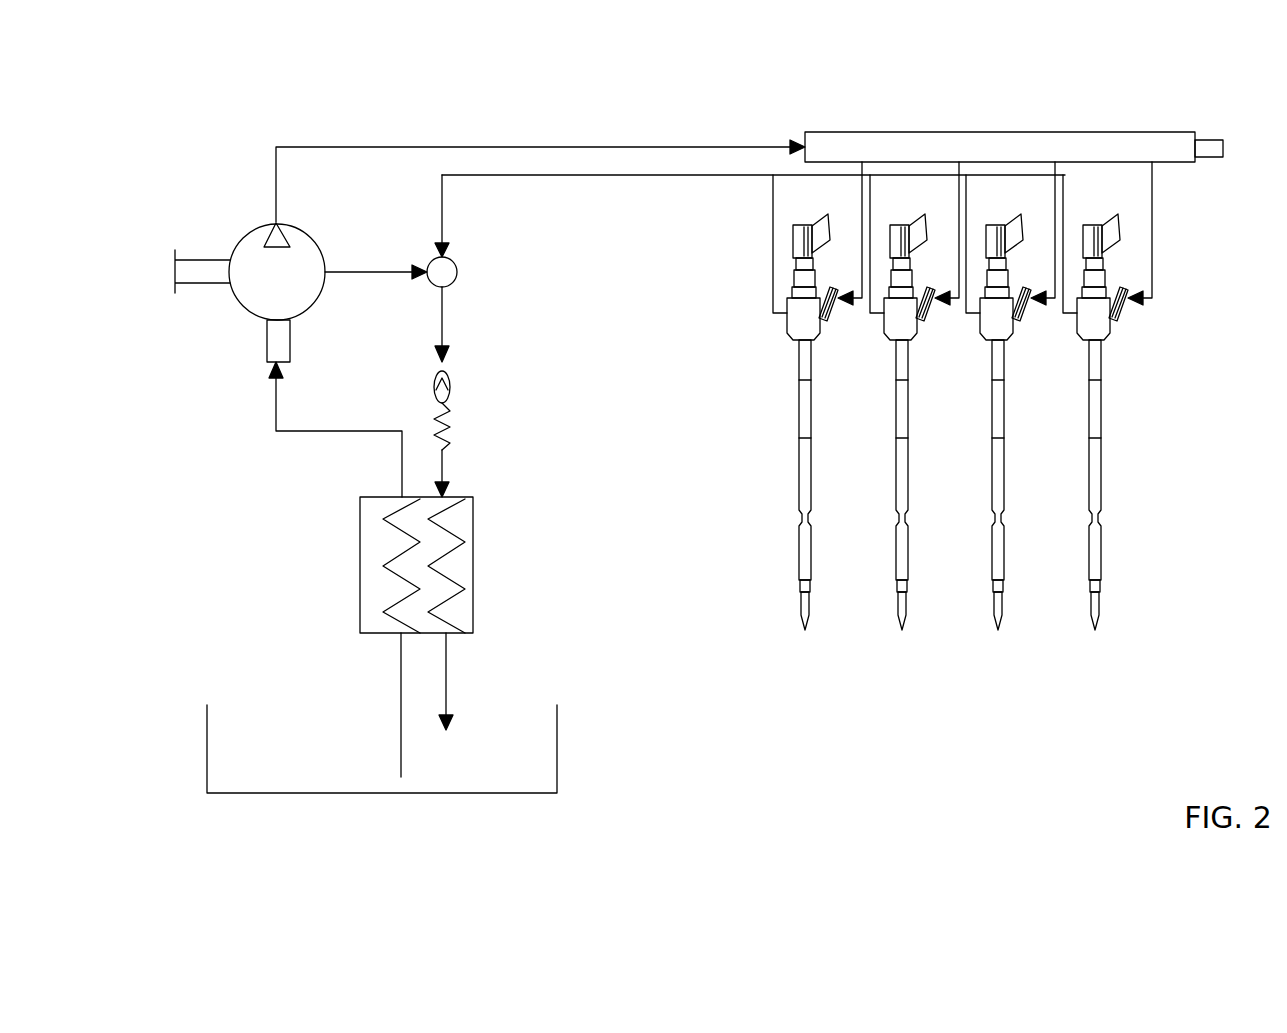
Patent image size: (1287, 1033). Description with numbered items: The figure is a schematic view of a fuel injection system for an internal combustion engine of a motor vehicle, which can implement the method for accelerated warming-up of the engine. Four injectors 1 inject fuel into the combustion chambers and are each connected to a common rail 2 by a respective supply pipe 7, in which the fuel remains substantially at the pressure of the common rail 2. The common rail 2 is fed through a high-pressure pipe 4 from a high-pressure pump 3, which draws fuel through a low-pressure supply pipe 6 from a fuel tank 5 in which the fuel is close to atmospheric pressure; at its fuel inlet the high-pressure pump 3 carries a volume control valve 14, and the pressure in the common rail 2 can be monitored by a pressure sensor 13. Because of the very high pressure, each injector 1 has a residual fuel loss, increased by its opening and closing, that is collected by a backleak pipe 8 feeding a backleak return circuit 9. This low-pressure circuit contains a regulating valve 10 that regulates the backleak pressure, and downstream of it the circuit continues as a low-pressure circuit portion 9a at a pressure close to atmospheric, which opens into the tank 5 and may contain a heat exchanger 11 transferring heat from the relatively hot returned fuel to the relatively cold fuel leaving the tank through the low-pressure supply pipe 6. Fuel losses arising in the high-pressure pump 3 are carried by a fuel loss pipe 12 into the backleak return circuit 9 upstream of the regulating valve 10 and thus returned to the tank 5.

The injector 1 is at (1095, 487).
The common rail 2 is at (862, 142).
The high-pressure pump 3 is at (247, 260).
The high-pressure pipe 4 is at (460, 145).
The fuel tank 5 is at (518, 743).
The low-pressure supply pipe 6 is at (330, 430).
The supply pipe 7 is at (1151, 202).
The backleak pipe 8 is at (1065, 313).
The backleak return circuit 9 is at (618, 177).
The low-pressure circuit portion 9a is at (447, 463).
The regulating valve 10 is at (450, 380).
The heat exchanger 11 is at (458, 605).
The fuel loss pipe 12 is at (367, 270).
The pressure sensor 13 is at (1195, 122).
The volume control valve 14 is at (266, 342).